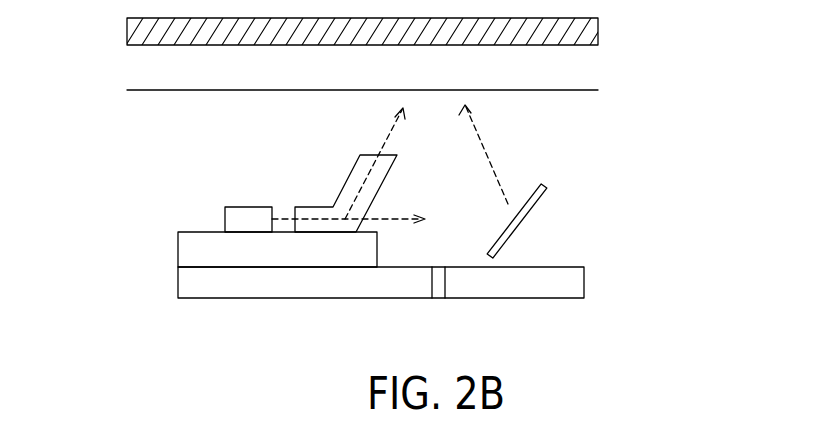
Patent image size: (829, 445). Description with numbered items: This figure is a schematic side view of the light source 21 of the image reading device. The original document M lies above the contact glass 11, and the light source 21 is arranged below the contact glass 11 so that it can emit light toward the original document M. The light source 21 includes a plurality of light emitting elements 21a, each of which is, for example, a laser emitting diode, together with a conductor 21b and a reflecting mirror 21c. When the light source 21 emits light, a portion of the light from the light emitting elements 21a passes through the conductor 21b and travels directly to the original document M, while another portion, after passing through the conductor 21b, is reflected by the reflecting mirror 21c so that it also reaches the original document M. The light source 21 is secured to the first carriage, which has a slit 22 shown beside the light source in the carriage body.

The original document M is at (585, 33).
The contact glass 11 is at (578, 69).
The light source 21 is at (664, 159).
The light emitting element 21a is at (240, 215).
The conductor 21b is at (358, 176).
The reflecting mirror 21c is at (538, 205).
The slit 22 is at (436, 263).